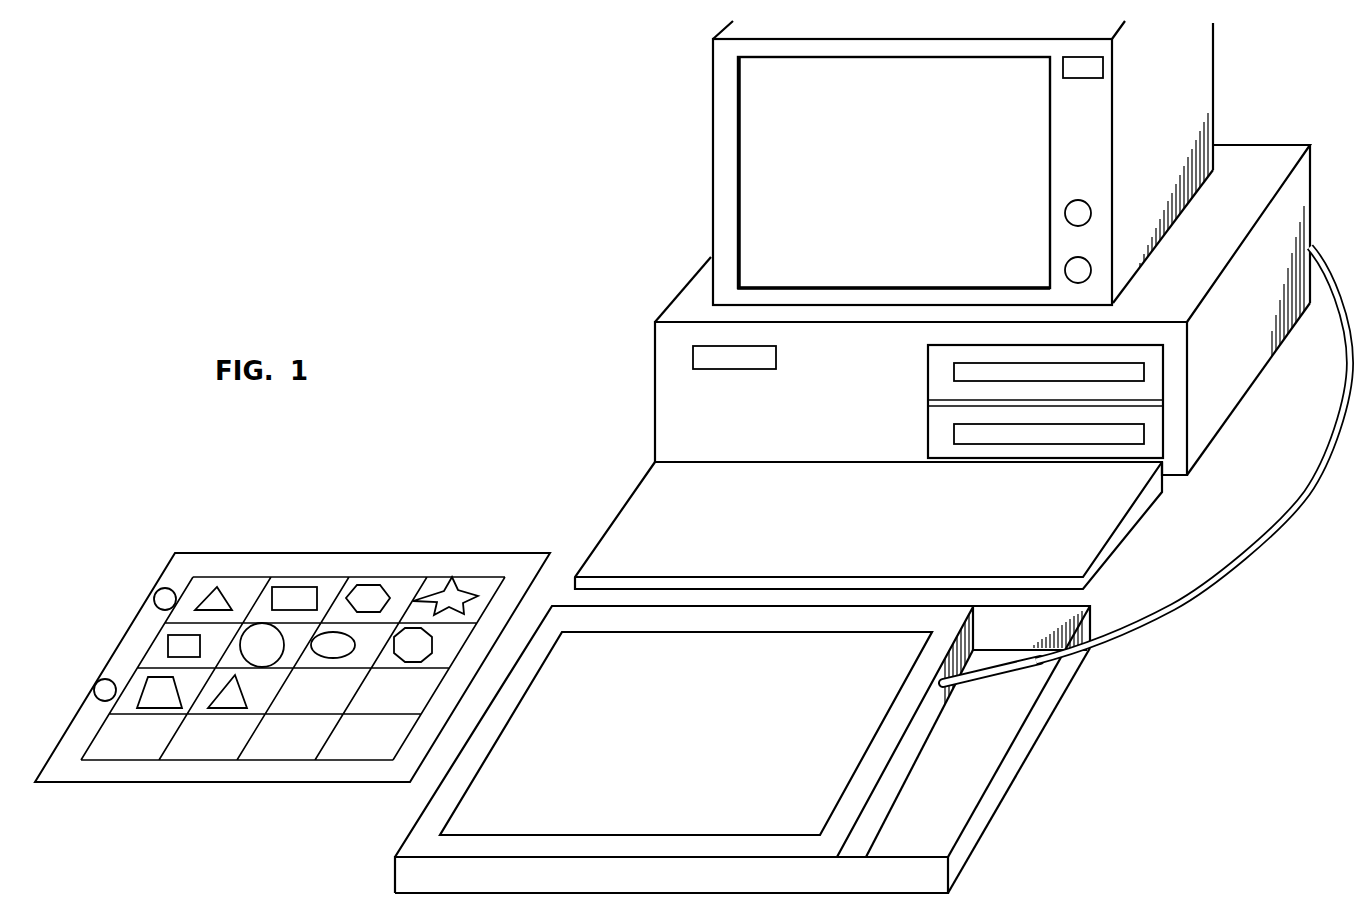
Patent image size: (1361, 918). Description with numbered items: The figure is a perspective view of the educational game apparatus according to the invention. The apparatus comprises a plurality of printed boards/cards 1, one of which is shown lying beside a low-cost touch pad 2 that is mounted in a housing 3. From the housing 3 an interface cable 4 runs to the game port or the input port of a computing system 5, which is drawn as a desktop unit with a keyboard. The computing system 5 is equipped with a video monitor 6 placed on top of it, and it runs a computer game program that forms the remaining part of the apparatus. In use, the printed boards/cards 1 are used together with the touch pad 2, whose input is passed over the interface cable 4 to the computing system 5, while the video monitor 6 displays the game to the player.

The printed boards/cards 1 is at (110, 647).
The touch pad 2 is at (528, 773).
The housing 3 is at (1032, 758).
The interface cable 4 is at (1260, 550).
The computing system 5 is at (620, 507).
The video monitor 6 is at (710, 117).